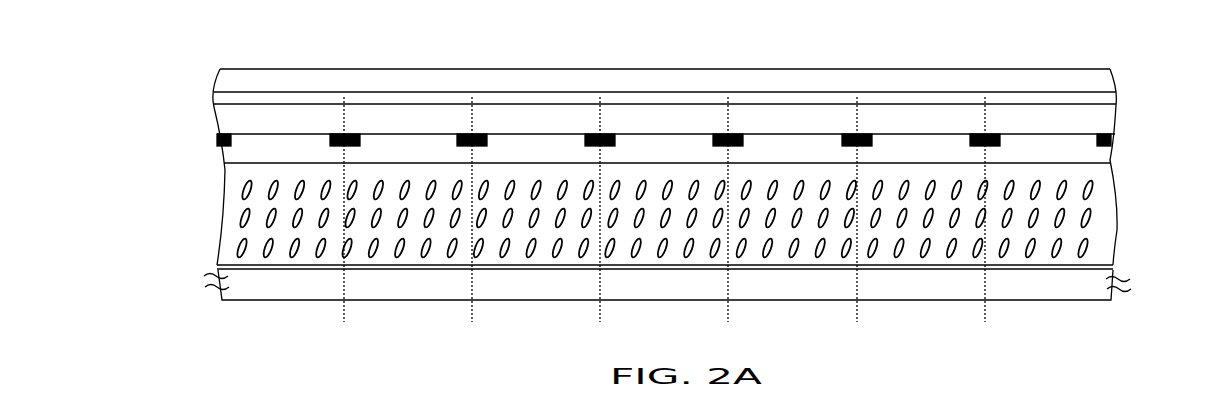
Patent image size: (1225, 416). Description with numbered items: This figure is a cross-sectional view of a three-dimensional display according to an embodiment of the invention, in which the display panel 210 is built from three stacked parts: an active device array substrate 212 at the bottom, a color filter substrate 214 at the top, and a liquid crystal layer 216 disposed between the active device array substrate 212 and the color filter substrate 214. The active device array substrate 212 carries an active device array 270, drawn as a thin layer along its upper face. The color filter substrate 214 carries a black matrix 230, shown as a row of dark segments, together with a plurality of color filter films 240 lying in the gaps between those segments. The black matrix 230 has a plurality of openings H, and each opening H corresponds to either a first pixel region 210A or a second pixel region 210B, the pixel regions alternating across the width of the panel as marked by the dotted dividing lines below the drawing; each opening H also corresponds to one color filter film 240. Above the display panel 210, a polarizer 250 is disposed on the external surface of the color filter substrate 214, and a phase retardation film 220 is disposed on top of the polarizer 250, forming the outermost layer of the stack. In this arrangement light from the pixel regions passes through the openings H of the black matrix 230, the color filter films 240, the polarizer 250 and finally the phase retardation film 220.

The display panel 210 is at (131, 122).
The active device array substrate 212 is at (194, 268).
The color filter substrate 214 is at (194, 103).
The liquid crystal layer 216 is at (194, 163).
The phase retardation film 220 is at (1105, 72).
The black matrix 230 is at (586, 136).
The color filter film 240 is at (646, 148).
The polarizer 250 is at (1108, 97).
The active device array 270 is at (1114, 267).
The opening H is at (515, 140).
The first pixel region 210A is at (670, 217).
The second pixel region 210B is at (689, 217).